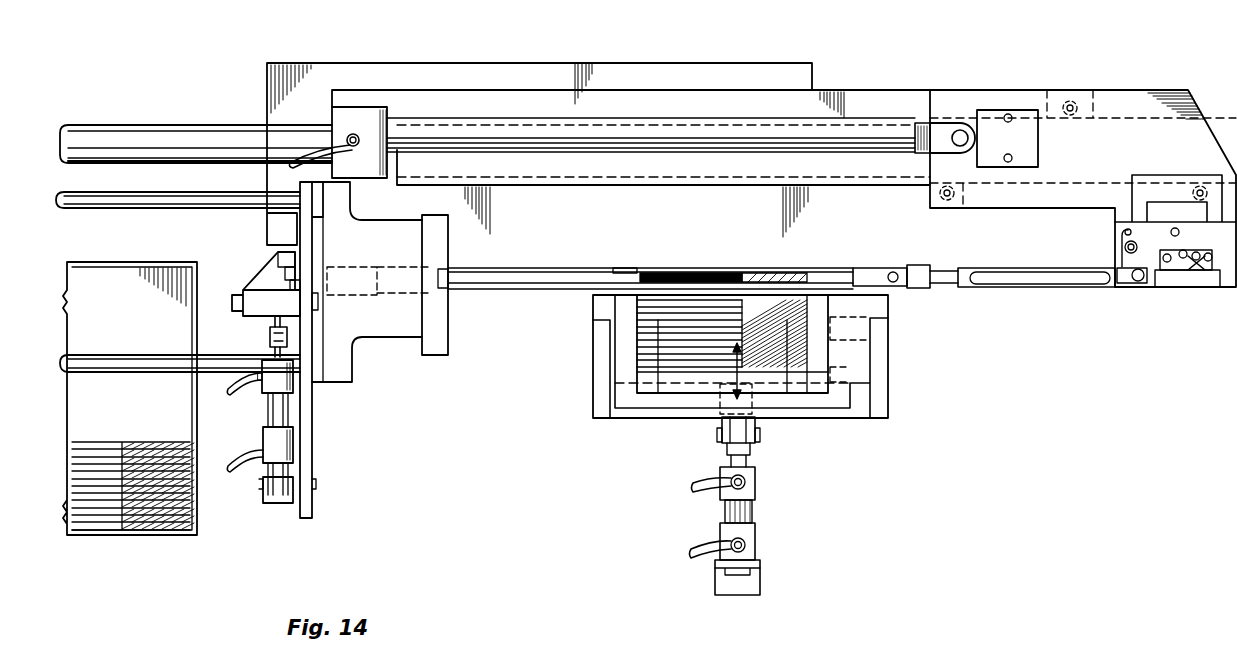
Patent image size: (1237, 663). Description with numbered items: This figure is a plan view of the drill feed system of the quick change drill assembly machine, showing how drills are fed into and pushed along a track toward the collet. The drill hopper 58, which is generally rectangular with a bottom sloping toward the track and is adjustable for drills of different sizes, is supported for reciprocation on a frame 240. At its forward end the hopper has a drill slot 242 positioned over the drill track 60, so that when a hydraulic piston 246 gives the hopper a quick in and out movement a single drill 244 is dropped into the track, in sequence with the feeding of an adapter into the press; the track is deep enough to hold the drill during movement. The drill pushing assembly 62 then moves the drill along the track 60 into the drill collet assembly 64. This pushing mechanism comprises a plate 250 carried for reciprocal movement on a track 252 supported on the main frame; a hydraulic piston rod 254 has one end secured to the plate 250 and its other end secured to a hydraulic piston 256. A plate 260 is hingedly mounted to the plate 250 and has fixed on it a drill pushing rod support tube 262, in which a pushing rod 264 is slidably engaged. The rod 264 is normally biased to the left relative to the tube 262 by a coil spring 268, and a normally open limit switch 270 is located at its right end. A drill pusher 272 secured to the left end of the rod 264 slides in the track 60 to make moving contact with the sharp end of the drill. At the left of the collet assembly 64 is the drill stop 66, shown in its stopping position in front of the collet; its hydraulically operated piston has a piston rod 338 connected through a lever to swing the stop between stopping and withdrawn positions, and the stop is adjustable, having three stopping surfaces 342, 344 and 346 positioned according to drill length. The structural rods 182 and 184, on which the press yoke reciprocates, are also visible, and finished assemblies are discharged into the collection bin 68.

The drill hopper 58 is at (779, 390).
The drill track 60 is at (650, 248).
The drill pushing assembly 62 is at (1083, 159).
The drill collet assembly 64 is at (380, 348).
The drill stop 66 is at (298, 274).
The collection bin 68 is at (132, 537).
The structural rod 182 is at (130, 198).
The structural rod 184 is at (158, 362).
The frame 240 is at (880, 381).
The drill slot 242 is at (640, 268).
The drill 244 is at (722, 268).
The hydraulic piston 246 is at (757, 513).
The plate 250 is at (1147, 100).
The track 252 is at (845, 184).
The hydraulic piston rod 254 is at (853, 135).
The hydraulic piston 256 is at (160, 128).
The plate 260 is at (1124, 228).
The drill pushing rod support tube 262 is at (1045, 309).
The pushing rod 264 is at (1032, 286).
The coil spring 268 is at (1120, 260).
The limit switch 270 is at (1187, 284).
The drill pusher 272 is at (933, 288).
The piston rod 338 is at (270, 352).
The stopping surface 342 is at (296, 282).
The stopping surface 344 is at (296, 272).
The stopping surface 346 is at (294, 258).